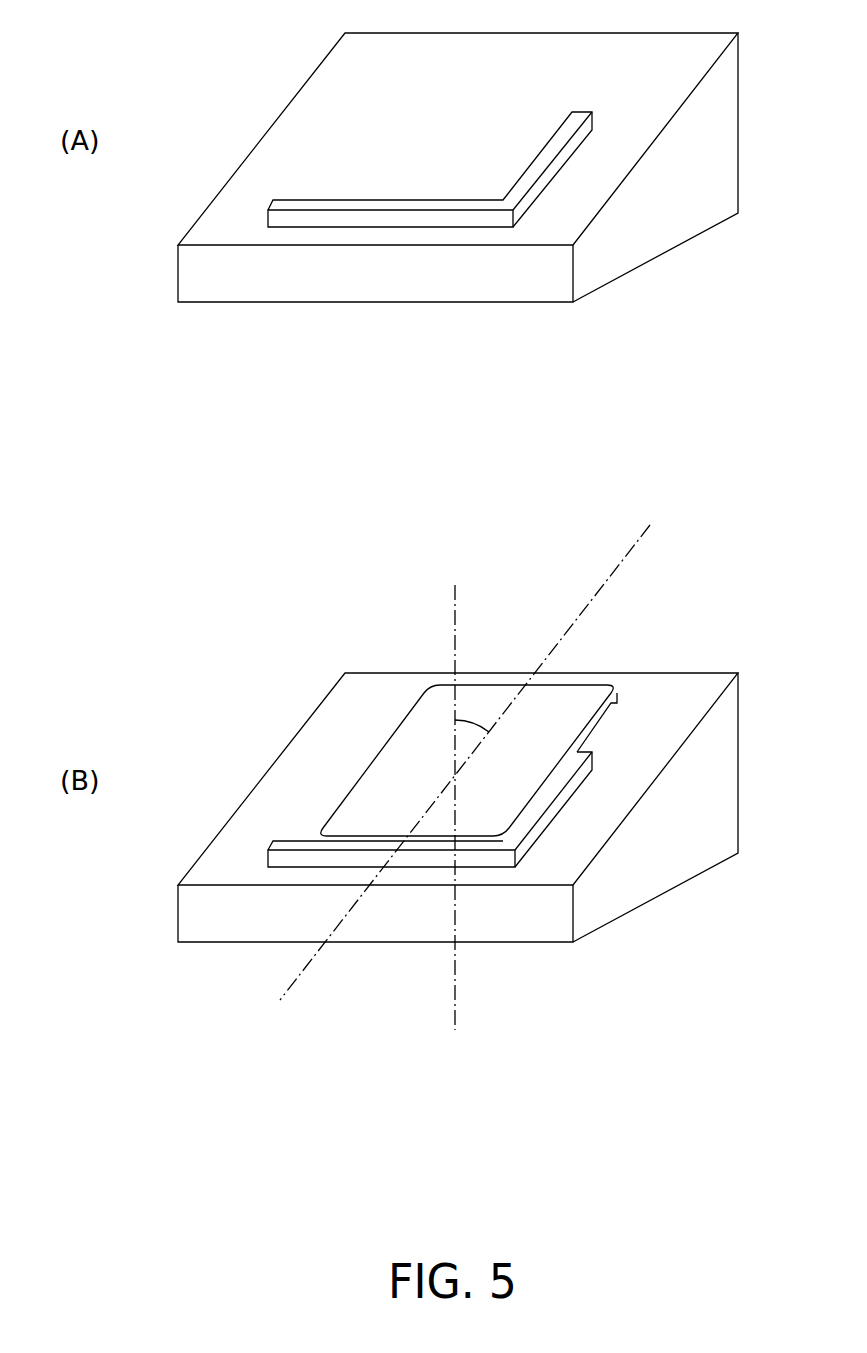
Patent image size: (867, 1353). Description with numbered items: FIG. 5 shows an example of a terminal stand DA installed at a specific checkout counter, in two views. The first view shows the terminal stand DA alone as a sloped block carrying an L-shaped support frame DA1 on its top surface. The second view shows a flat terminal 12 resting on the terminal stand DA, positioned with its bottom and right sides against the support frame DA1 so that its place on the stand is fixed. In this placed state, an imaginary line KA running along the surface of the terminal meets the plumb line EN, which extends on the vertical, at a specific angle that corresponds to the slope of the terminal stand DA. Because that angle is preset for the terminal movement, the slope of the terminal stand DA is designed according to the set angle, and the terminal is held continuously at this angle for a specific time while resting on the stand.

The terminal stand DA is at (653, 220).
The support frame DA1 is at (425, 218).
The semiconductor chip 12 is at (597, 697).
The plumb line EN is at (457, 627).
The imaginary line KA is at (600, 588).